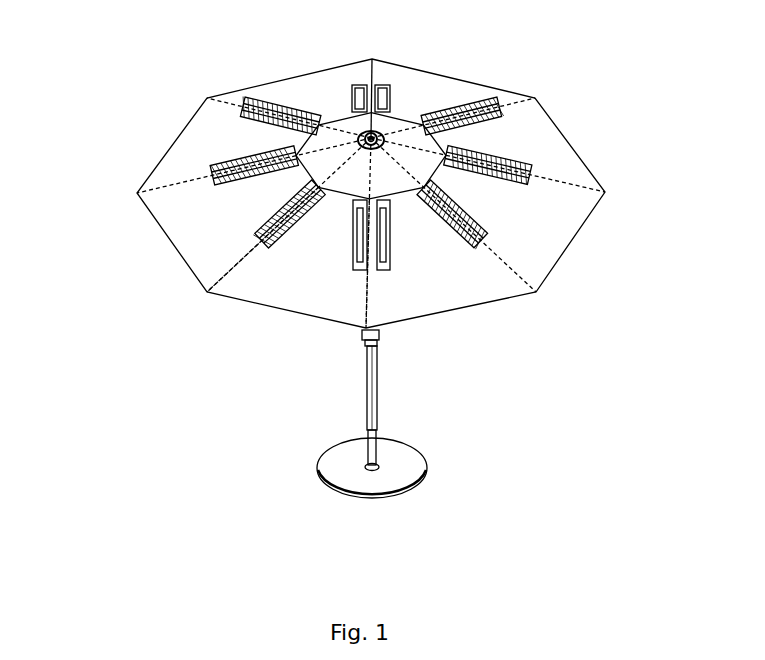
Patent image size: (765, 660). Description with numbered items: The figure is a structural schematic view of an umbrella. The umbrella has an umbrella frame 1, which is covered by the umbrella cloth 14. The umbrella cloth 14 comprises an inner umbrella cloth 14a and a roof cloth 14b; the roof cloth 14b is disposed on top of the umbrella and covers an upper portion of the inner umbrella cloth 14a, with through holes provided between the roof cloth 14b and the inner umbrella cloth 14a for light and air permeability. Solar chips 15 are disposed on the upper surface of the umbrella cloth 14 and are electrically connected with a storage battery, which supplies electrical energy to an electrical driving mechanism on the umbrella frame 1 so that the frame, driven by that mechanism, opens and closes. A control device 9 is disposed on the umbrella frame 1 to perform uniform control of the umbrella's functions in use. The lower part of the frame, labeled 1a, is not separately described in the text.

The umbrella frame 1 is at (380, 381).
The support pole 1a is at (368, 357).
The control device 9 is at (380, 337).
The umbrella cloth 14 is at (226, 302).
The inner umbrella cloth 14a is at (282, 288).
The roof cloth 14b is at (305, 137).
The solar chips 15 is at (277, 105).